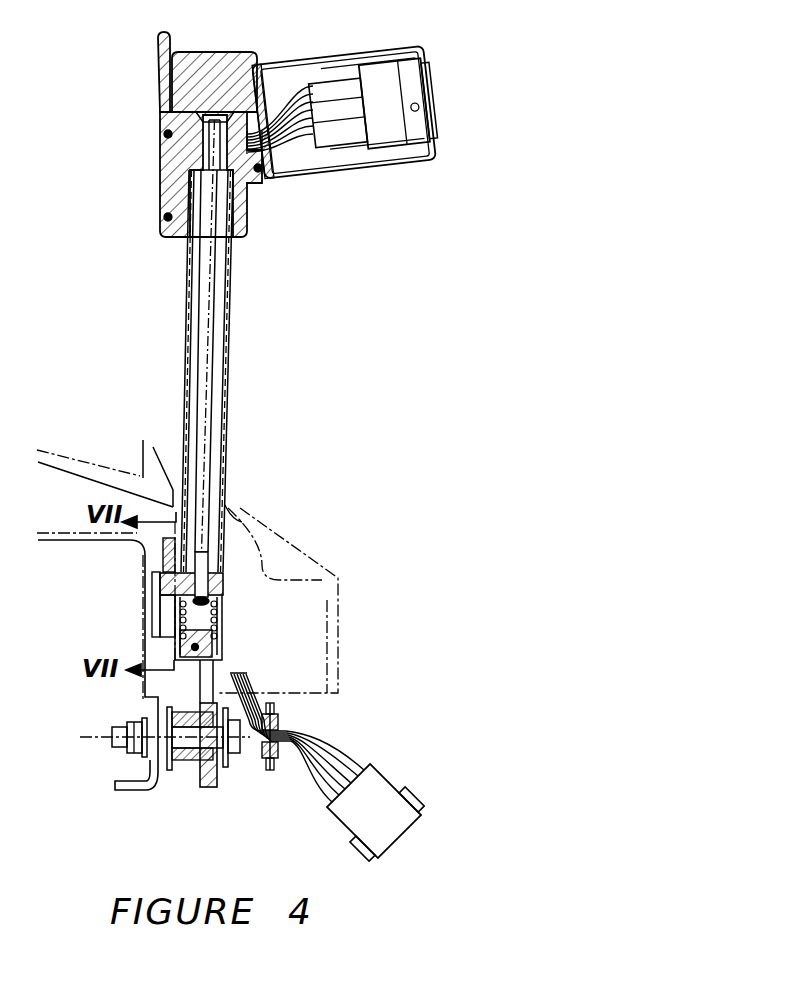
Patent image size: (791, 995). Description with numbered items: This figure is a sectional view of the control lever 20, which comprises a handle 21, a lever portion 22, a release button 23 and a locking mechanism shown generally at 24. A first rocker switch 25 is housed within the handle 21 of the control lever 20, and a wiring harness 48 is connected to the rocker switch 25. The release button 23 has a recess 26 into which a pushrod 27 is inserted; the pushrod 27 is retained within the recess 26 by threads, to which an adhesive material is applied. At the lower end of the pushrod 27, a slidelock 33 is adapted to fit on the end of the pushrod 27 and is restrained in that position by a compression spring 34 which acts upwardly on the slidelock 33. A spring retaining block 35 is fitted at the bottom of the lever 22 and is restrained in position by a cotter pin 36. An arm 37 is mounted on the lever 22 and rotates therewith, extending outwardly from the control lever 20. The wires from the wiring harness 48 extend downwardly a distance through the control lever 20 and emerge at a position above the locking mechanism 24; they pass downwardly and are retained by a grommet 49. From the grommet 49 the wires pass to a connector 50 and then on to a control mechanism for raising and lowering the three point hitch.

The control lever 20 is at (98, 405).
The handle 21 is at (412, 165).
The lever portion 22 is at (228, 383).
The release button 23 is at (233, 52).
The locking mechanism 24 is at (110, 597).
The first rocker switch 25 is at (435, 102).
The recess 26 is at (160, 178).
The pushrod 27 is at (217, 332).
The slidelock 33 is at (203, 567).
The compression spring 34 is at (214, 609).
The spring retaining block 35 is at (218, 622).
The cotter pin 36 is at (183, 660).
The arm 37 is at (222, 668).
The wiring harness 48 is at (305, 140).
The grommet 49 is at (278, 722).
The connector 50 is at (392, 787).